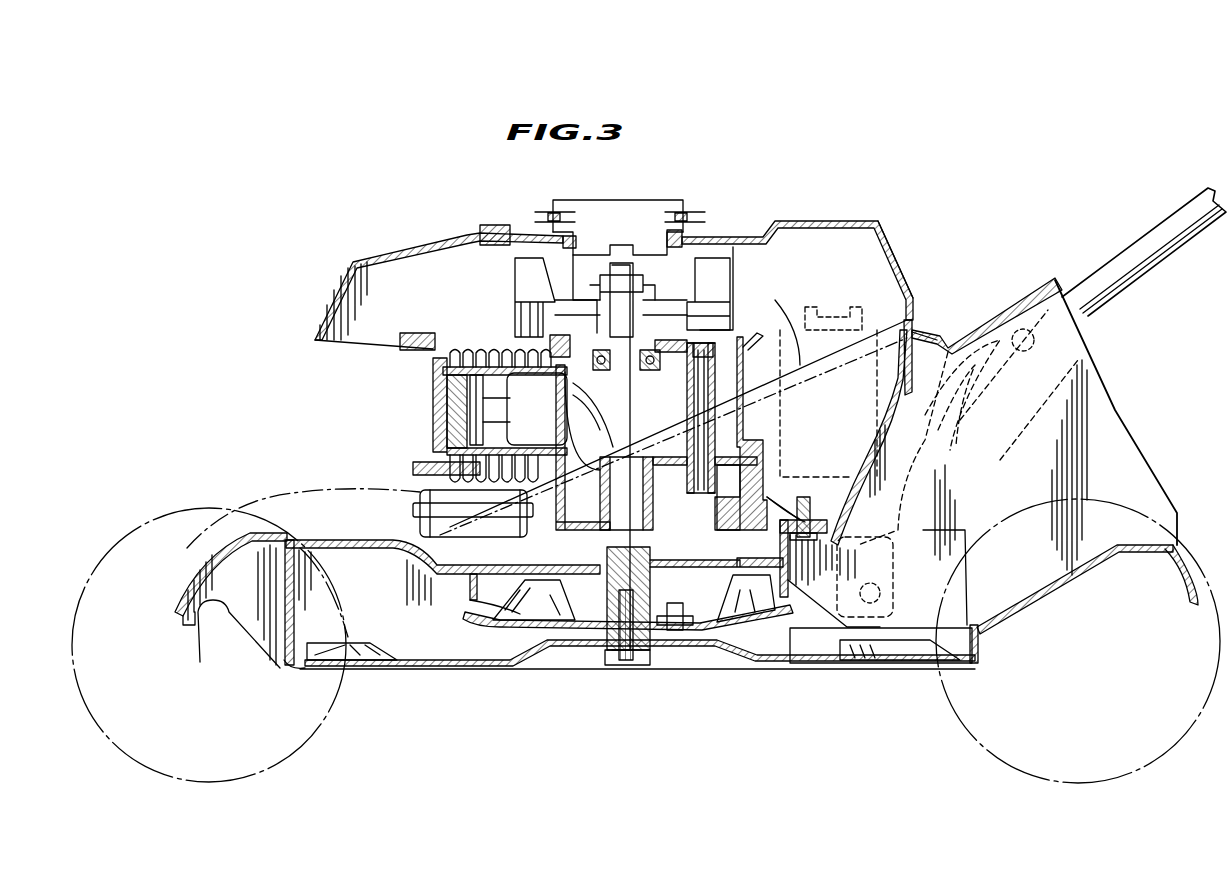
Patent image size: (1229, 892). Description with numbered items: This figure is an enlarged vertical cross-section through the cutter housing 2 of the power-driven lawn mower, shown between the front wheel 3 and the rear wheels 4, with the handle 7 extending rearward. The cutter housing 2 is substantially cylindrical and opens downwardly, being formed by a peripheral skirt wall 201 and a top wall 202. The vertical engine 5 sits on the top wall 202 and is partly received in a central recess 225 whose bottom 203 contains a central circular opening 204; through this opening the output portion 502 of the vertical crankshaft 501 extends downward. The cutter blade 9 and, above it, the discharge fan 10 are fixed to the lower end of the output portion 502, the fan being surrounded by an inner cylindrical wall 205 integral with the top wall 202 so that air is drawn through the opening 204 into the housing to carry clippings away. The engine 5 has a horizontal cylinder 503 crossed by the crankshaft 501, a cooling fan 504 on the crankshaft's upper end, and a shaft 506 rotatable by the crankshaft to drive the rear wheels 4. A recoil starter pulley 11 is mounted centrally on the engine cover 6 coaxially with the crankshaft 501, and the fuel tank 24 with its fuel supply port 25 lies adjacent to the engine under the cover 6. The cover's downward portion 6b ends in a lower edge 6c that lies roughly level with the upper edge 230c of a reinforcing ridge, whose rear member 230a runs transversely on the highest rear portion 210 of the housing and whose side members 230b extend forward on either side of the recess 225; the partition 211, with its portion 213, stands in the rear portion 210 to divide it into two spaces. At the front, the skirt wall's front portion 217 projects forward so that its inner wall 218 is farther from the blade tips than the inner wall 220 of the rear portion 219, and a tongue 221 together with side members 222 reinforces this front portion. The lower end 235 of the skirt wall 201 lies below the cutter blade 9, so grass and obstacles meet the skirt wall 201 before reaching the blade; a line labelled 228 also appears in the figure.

The cutter housing 2 is at (312, 528).
The front wheel 3 is at (340, 690).
The rear wheels 4 is at (950, 714).
The vertical engine 5 is at (448, 320).
The engine cover 6 is at (400, 248).
The downward portion of the engine cover 6b is at (900, 256).
The lower edge of the downward portion 6c is at (930, 330).
The handle 7 is at (1150, 262).
The cutter blade 9 is at (415, 668).
The discharge fan 10 is at (510, 612).
The recoil starter pulley 11 is at (700, 208).
The fuel tank 24 is at (918, 452).
The fuel supply port 25 is at (820, 306).
The peripheral skirt wall 201 is at (302, 602).
The top wall 202 is at (360, 540).
The bottom of the central recess 203 is at (497, 570).
The central circular opening 204 is at (522, 566).
The inner cylindrical wall 205 is at (470, 596).
The rear portion of the cutter housing 210 is at (1018, 292).
The partition 211 is at (1115, 430).
The portion of the partition 213 is at (910, 634).
The front portion of the skirt wall 217 is at (290, 625).
The inner wall of the front portion 218 is at (300, 618).
The rear portion of the skirt wall 219 is at (978, 642).
The inner wall of the rear portion 220 is at (966, 662).
The tongue 221 is at (228, 540).
The side members 222 is at (210, 614).
The central recess 225 is at (843, 372).
The cover engaging portion 228 is at (917, 332).
The rear member of the ridge 230a is at (928, 350).
The side members of the ridge 230b is at (395, 470).
The upper edge of the ridge 230c is at (818, 352).
The lower end of the skirt wall 235 is at (292, 667).
The vertical crankshaft 501 is at (668, 527).
The output portion of the crankshaft 502 is at (647, 583).
The horizontal cylinder 503 is at (482, 346).
The cooling fan 504 is at (722, 268).
The shaft 506 is at (700, 408).